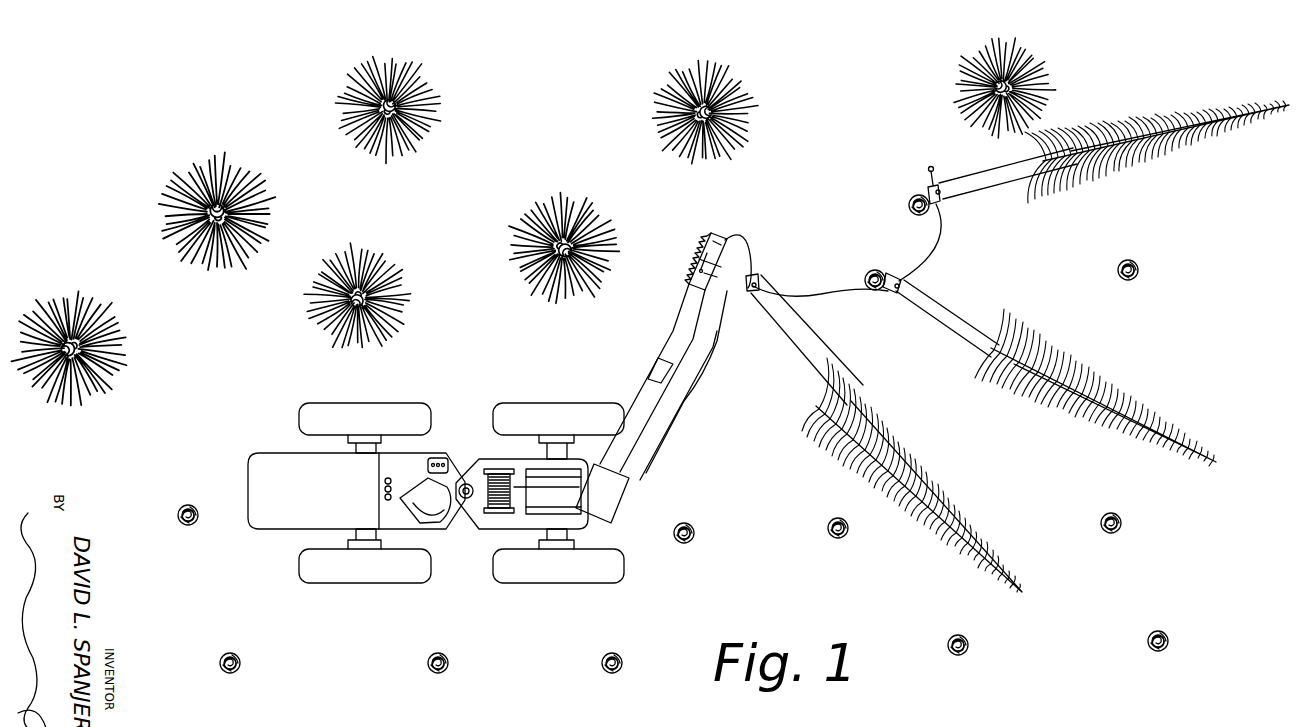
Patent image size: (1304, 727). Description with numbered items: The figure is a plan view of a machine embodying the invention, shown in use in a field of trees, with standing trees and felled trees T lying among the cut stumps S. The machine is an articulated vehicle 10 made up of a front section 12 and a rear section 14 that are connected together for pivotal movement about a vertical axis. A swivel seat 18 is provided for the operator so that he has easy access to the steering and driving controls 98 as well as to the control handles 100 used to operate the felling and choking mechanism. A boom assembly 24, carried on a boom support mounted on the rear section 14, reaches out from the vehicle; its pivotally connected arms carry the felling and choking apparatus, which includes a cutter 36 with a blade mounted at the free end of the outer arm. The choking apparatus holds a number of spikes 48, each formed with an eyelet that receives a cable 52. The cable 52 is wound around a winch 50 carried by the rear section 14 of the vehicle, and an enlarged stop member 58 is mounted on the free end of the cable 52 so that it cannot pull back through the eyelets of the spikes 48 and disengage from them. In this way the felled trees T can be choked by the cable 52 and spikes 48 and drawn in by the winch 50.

The articulated vehicle 10 is at (258, 541).
The front section 12 is at (287, 515).
The rear section 14 is at (475, 513).
The swivel seat 18 is at (428, 513).
The boom assembly 24 is at (636, 379).
The cutter 36 is at (689, 259).
The spikes 48 is at (760, 281).
The winch 50 is at (477, 467).
The cable 52 is at (683, 397).
The stop member 58 is at (928, 168).
The steering and driving controls 98 is at (383, 469).
The control handles 100 is at (437, 457).
The stump S is at (895, 187).
The felled tree T is at (1143, 122).